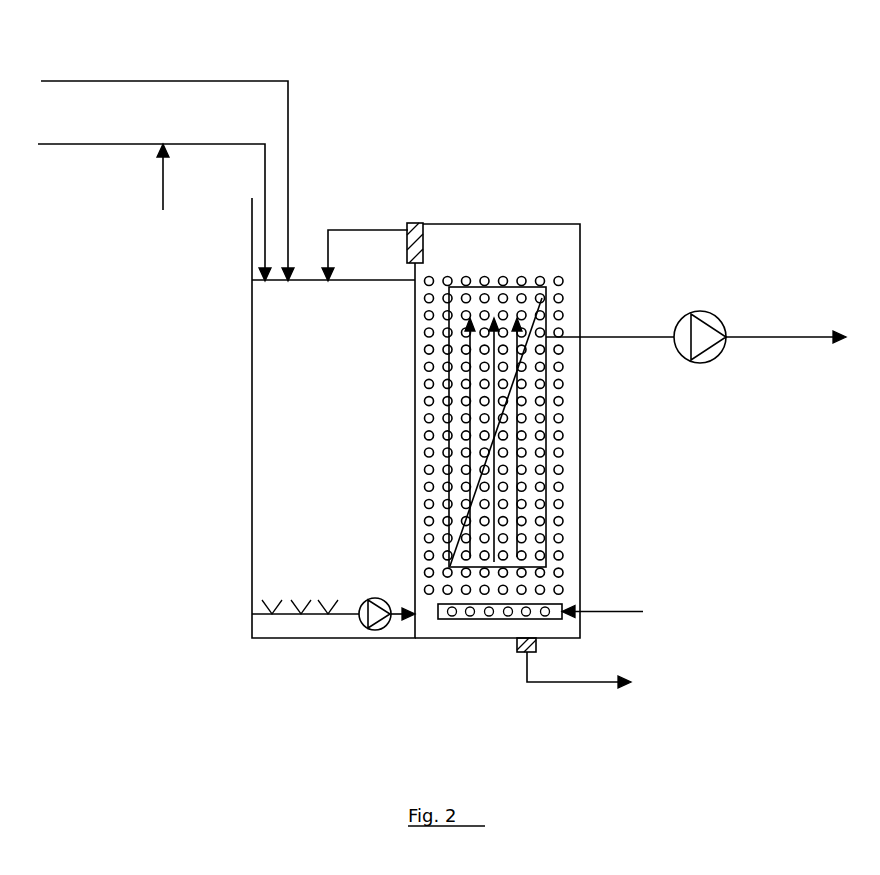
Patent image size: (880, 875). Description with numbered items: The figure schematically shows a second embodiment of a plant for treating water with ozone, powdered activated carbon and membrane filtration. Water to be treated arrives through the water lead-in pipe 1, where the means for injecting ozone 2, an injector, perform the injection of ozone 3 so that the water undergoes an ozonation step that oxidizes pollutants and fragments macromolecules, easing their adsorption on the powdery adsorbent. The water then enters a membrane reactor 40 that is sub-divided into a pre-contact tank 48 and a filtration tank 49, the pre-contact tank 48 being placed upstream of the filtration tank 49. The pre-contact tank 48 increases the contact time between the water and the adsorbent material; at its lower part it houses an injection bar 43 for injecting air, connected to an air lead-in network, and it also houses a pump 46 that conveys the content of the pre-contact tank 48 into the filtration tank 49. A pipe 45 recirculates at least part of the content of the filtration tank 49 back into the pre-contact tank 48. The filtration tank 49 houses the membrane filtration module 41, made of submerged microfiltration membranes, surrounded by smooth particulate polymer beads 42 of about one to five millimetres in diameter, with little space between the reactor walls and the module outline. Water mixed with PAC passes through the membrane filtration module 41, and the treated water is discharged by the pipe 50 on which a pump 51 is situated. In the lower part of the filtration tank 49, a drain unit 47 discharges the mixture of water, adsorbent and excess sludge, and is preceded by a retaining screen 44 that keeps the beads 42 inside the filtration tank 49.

The water lead-in pipe 1 is at (41, 148).
The means for injecting ozone 2 is at (163, 195).
The injection of ozone 3 is at (256, 81).
The membrane reactor 40 is at (580, 457).
The membrane filtration module 41 is at (546, 408).
The beads 42 is at (429, 469).
The injection bar 43 is at (265, 614).
The retaining screen 44 is at (416, 240).
The recirculation pipe 45 is at (353, 229).
The pump 46 is at (360, 628).
The drain unit 47 is at (553, 682).
The pre-contact tank 48 is at (252, 395).
The filtration tank 49 is at (336, 392).
The pipe 50 is at (652, 337).
The pump 51 is at (708, 312).